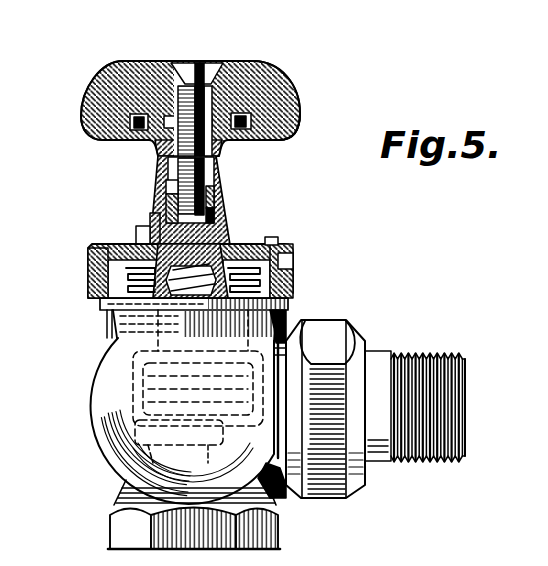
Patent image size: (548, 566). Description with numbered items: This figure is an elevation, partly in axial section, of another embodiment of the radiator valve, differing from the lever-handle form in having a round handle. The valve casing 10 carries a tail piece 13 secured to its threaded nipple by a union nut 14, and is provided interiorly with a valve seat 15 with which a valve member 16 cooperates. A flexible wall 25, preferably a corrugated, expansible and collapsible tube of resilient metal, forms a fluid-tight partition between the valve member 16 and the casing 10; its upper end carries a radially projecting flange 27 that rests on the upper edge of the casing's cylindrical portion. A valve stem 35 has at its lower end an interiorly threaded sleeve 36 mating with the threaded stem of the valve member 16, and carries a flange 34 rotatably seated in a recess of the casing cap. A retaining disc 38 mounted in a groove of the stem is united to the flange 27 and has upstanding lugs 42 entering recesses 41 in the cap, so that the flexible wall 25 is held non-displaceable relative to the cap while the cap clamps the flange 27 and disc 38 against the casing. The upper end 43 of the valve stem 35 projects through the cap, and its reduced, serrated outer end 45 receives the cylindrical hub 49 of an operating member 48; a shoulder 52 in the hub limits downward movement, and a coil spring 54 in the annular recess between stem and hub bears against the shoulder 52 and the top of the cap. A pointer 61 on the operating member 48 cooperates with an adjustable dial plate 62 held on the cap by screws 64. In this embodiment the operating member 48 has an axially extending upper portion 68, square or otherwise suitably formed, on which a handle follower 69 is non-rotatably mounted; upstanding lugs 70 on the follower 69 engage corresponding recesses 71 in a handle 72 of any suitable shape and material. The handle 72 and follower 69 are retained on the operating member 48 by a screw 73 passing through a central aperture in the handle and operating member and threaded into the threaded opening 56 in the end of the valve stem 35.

The valve casing 10 is at (86, 408).
The tail piece 13 is at (428, 346).
The union nut 14 is at (323, 323).
The valve seat 15 is at (110, 477).
The valve member 16 is at (125, 428).
The flexible wall 25 is at (120, 350).
The radially projecting flange 27 is at (96, 282).
The flange 34 is at (100, 263).
The valve stem 35 is at (222, 236).
The interiorly threaded sleeve 36 is at (133, 303).
The retaining disc 38 is at (286, 263).
The recesses 41 is at (276, 238).
The upstanding lugs 42 is at (287, 248).
The upper end of valve stem 43 is at (128, 226).
The outer end of reduced diameter 45 is at (212, 186).
The operating member 48 is at (212, 166).
The cylindrical hub 49 is at (155, 205).
The shoulder 52 is at (83, 247).
The coil spring 54 is at (150, 212).
The threaded opening 56 is at (222, 210).
The pointer 61 is at (128, 217).
The dial plate 62 is at (117, 237).
The screws 64 is at (268, 229).
The axially extending upper portion 68 is at (150, 141).
The handle follower 69 is at (218, 138).
The upstanding lugs 70 is at (88, 108).
The recesses 71 is at (110, 90).
The handle 72 is at (258, 64).
The screw 73 is at (200, 55).